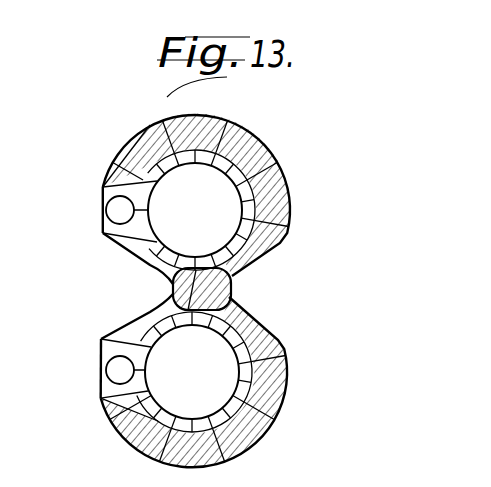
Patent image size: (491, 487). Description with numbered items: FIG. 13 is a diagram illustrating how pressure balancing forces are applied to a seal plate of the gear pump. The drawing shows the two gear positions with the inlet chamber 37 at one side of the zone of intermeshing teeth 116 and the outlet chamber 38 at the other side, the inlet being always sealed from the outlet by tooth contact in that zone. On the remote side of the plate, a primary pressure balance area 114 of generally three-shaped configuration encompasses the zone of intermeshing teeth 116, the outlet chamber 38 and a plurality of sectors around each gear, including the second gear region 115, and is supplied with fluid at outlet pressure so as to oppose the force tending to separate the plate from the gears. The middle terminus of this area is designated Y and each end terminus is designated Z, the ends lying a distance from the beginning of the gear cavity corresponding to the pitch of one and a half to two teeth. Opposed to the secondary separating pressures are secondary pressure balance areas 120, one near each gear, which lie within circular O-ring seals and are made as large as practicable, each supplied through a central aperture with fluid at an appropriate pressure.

The pressure balance area 114 is at (272, 163).
The rotor 115 is at (194, 382).
The zone of intermeshing teeth 116 is at (173, 293).
The secondary pressure balance area 120 is at (120, 211).
The inlet chamber 37 is at (127, 297).
The outlet chamber 38 is at (331, 301).
The end terminus Z is at (103, 183).
The middle terminus Y is at (158, 270).